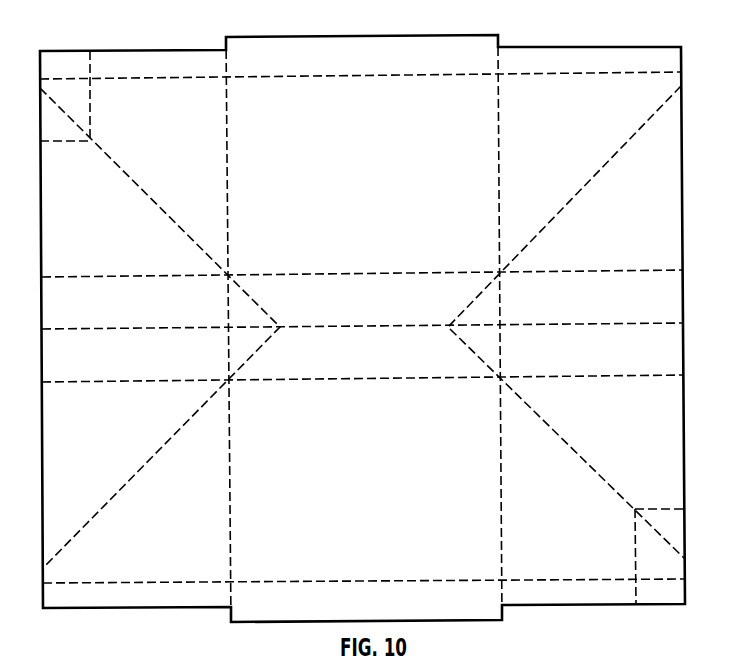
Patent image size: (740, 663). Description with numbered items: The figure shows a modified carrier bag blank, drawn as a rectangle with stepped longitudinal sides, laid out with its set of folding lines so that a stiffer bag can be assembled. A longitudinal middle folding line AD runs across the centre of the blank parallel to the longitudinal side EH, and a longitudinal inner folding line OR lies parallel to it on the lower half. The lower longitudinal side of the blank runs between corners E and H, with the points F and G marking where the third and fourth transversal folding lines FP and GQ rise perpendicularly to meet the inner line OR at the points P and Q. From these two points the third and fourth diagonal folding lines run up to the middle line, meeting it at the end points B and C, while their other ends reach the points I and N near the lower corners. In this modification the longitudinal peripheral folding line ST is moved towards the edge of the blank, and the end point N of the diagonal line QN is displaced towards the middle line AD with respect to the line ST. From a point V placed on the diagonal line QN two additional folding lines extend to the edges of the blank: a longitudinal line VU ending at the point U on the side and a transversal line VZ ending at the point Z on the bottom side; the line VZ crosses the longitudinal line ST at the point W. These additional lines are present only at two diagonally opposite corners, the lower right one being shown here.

The end point of middle folding line A is at (33, 330).
The end point of diagonal folding lines B is at (290, 340).
The end point of diagonal folding lines C is at (446, 340).
The end point of middle folding line D is at (694, 323).
The end point of longitudinal inner folding line O is at (33, 383).
The crossing point P is at (240, 393).
The crossing point Q is at (488, 391).
The end point of longitudinal inner folding line R is at (694, 376).
The point on diagonal folding line V is at (625, 510).
The end point of additional longitudinal folding line U is at (695, 510).
The end point of diagonal folding line N is at (695, 559).
The crossing point W is at (624, 576).
The end point of longitudinal peripheral folding line T is at (695, 579).
The end point of third diagonal folding line I is at (36, 568).
The end point of longitudinal peripheral folding line S is at (35, 585).
The corner of blank E is at (35, 610).
The end point of third transversal folding line F is at (223, 623).
The end point of fourth transversal folding line G is at (513, 623).
The end point of additional transversal folding line Z is at (635, 623).
The corner of blank H is at (695, 623).